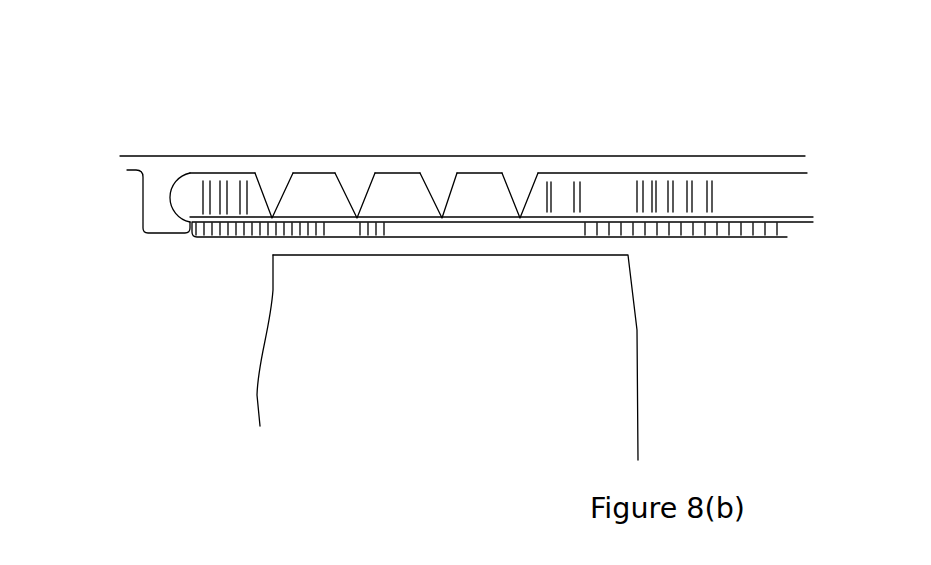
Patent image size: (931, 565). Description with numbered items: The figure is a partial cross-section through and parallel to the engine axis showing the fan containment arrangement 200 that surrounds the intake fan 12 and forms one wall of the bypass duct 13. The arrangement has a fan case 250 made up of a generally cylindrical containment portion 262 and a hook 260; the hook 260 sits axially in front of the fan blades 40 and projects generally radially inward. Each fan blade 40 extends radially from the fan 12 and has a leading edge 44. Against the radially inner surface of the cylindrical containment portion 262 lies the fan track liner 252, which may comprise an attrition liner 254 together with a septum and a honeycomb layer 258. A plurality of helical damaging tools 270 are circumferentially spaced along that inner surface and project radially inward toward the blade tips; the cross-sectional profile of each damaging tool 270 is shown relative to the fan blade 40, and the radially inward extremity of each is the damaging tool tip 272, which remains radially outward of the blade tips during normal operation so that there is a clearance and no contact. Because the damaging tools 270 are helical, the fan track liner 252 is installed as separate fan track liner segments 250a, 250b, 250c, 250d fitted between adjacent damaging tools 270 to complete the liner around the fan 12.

The fan containment arrangement 200 is at (585, 68).
The cylindrical containment portion 262 is at (582, 163).
The fan case 250 is at (647, 172).
The fan track liner segment 250a is at (488, 193).
The fan track liner segment 250b is at (397, 197).
The fan track liner segment 250c is at (315, 202).
The fan track liner segment 250d is at (238, 203).
The damaging tool 270 is at (273, 195).
The damaging tool tip 272 is at (447, 207).
The fan track liner 252 is at (717, 193).
The attrition liner 254 is at (552, 245).
The honeycomb layer 258 is at (210, 182).
The hook 260 is at (152, 213).
The intake fan 12 is at (222, 366).
The leading edge 44 is at (258, 280).
The fan blade 40 is at (360, 330).
The bypass duct 13 is at (798, 378).